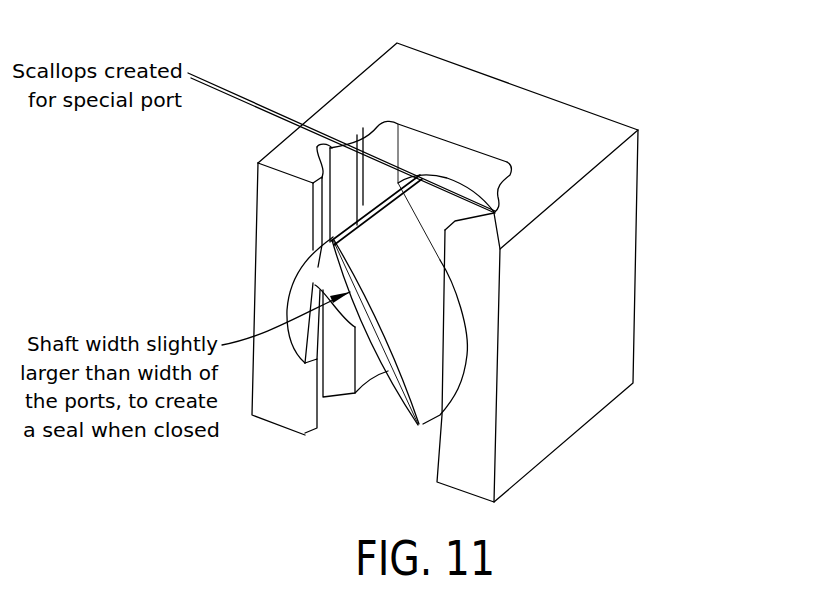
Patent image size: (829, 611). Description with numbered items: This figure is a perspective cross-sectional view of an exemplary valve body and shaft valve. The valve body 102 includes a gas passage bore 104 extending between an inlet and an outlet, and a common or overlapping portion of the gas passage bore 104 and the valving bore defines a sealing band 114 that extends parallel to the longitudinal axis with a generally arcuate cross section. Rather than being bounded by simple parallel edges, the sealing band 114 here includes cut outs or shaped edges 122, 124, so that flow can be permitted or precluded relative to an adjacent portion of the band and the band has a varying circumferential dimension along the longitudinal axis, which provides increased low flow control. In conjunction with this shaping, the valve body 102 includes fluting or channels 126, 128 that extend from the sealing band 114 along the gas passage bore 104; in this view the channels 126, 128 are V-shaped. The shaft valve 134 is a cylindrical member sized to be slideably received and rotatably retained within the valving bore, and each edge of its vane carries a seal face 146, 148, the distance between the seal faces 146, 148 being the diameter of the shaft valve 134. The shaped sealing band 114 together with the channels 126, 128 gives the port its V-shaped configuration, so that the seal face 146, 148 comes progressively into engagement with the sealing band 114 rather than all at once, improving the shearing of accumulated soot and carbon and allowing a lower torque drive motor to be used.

The valve body 102 is at (583, 213).
The gas passage bore 104 is at (435, 147).
The sealing band 114 is at (296, 281).
The shaped edge 122 is at (314, 252).
The shaped edge 124 is at (304, 367).
The channel 126 is at (309, 146).
The channel 128 is at (505, 195).
The shaft valve 134 is at (398, 293).
The seal face 146 is at (358, 215).
The seal face 148 is at (421, 430).